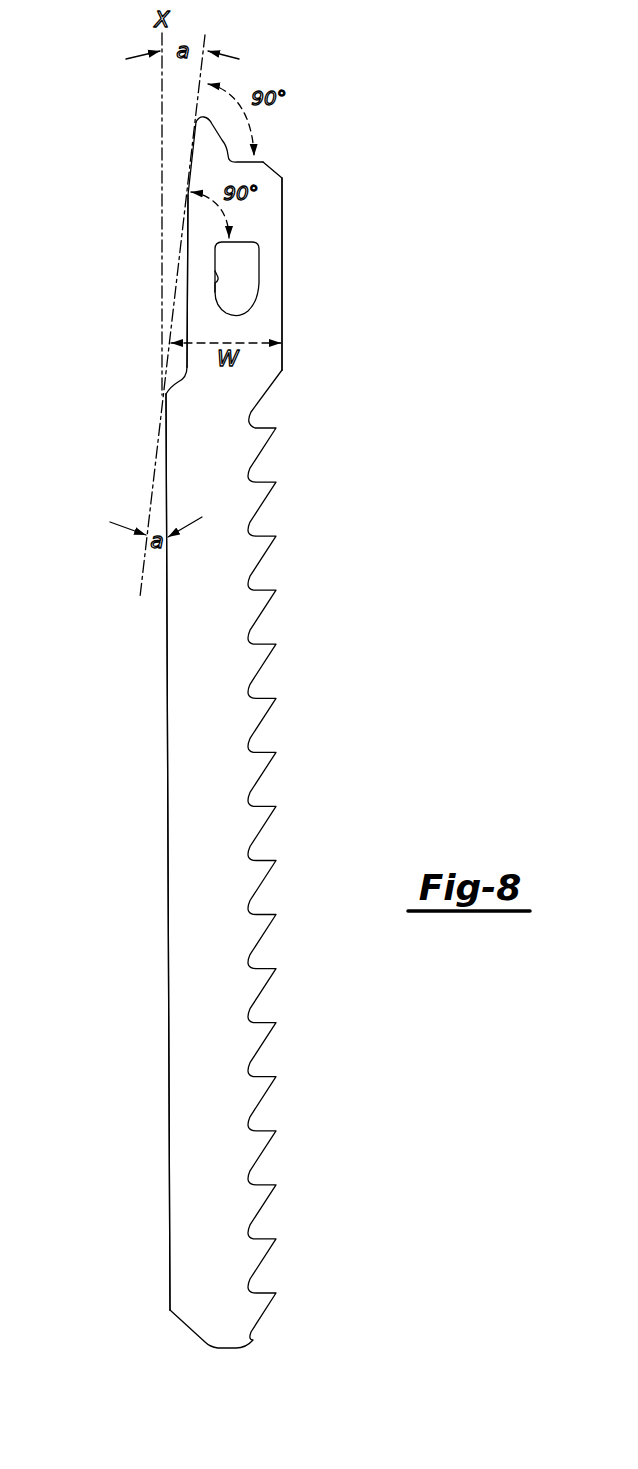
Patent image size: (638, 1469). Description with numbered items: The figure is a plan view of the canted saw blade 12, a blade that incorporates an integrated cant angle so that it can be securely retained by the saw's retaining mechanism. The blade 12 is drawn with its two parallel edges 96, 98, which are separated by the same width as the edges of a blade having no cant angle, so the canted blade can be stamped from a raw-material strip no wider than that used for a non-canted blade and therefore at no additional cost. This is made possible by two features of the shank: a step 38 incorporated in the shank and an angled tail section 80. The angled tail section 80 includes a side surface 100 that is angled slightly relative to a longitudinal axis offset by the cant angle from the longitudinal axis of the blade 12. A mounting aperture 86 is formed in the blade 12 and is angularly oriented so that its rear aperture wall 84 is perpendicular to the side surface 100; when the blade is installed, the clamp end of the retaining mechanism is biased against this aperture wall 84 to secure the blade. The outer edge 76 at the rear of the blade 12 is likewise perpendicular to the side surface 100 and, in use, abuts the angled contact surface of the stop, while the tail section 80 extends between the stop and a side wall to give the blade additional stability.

The saw blade 12 is at (180, 853).
The step 38 is at (184, 384).
The outer edge 76 is at (266, 158).
The tail section 80 is at (213, 143).
The aperture wall 84 is at (238, 247).
The mounting aperture 86 is at (216, 287).
The edge 96 is at (167, 735).
The edge 98 is at (287, 320).
The side surface 100 is at (188, 165).